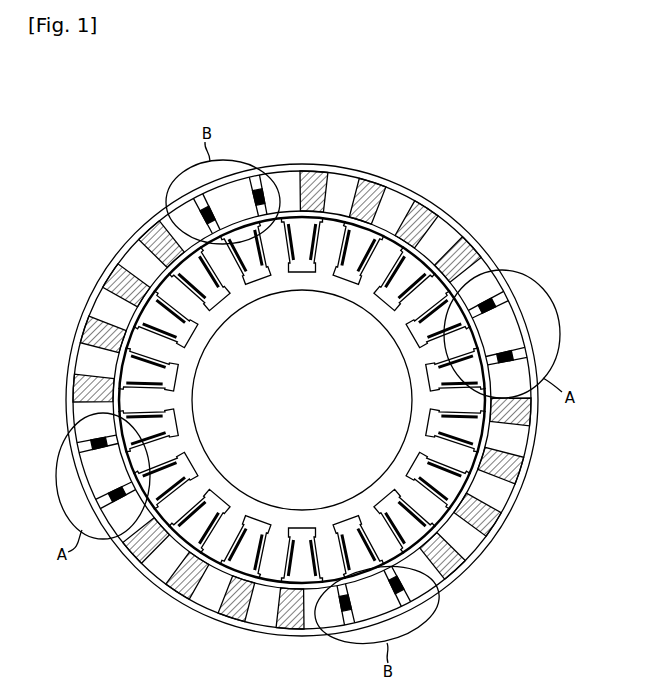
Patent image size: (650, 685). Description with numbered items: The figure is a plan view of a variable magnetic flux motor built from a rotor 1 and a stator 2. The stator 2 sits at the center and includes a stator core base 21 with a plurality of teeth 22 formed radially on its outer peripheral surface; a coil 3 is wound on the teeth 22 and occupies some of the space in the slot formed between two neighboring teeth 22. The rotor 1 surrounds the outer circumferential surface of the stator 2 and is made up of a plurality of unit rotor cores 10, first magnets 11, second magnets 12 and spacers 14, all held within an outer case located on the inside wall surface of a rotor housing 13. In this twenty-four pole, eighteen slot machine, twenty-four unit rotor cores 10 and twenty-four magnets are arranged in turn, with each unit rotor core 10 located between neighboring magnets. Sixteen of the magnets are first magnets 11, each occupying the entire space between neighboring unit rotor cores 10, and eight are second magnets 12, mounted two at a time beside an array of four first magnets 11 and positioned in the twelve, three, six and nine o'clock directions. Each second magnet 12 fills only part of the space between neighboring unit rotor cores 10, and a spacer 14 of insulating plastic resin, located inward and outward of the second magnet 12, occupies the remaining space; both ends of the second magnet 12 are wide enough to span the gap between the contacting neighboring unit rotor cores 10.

The rotor 1 is at (349, 400).
The unit rotor core 10 is at (447, 232).
The first magnet 11 is at (480, 242).
The second magnet 12 is at (492, 298).
The rotor housing 13 is at (533, 372).
The spacer 14 is at (600, 192).
The stator 2 is at (291, 322).
The stator core base 21 is at (345, 288).
The teeth 22 is at (385, 250).
The coil 3 is at (193, 295).